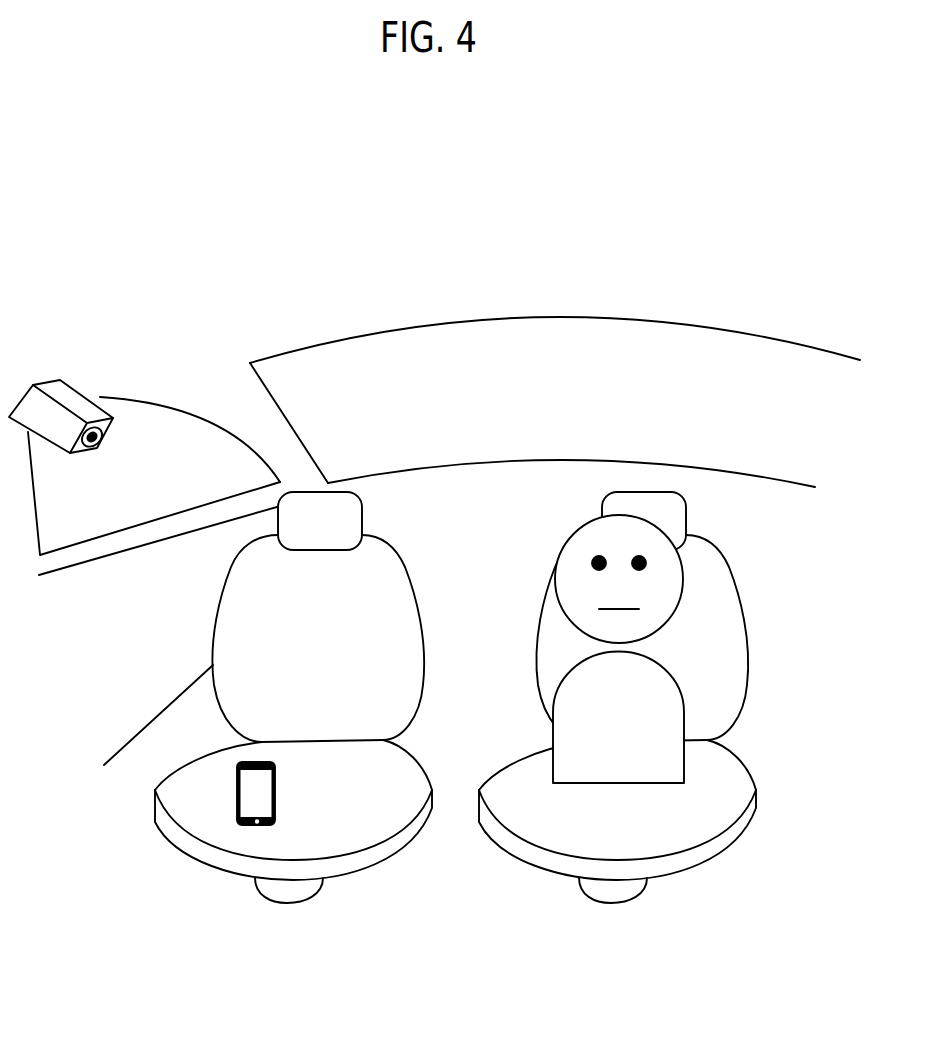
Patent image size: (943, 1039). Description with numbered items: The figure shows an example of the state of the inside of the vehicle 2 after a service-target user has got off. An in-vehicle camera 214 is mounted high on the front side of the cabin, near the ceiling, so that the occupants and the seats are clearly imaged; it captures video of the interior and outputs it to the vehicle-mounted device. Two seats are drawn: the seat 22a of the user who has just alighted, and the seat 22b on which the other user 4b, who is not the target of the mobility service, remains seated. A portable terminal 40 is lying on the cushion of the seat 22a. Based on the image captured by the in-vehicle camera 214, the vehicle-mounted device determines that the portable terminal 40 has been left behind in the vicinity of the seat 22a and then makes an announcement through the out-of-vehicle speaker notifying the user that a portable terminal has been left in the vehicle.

The vehicle 2 is at (263, 259).
The in-vehicle camera 214 is at (80, 392).
The seat of user 4a 22a is at (212, 622).
The seat of user 4b 22b is at (734, 579).
The user other than the target of the mobility service 4b is at (632, 513).
The portable terminal 40 is at (233, 795).